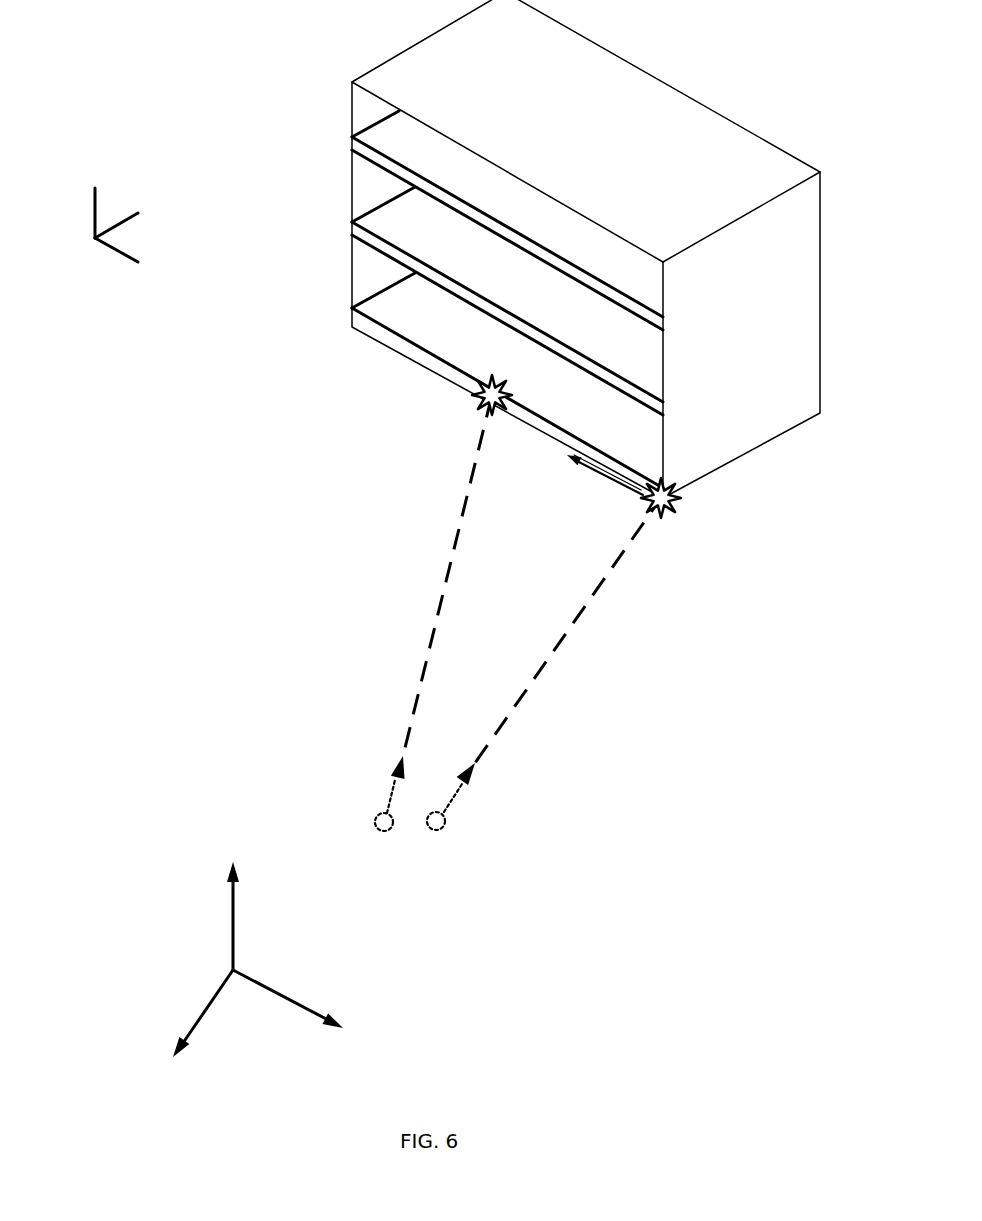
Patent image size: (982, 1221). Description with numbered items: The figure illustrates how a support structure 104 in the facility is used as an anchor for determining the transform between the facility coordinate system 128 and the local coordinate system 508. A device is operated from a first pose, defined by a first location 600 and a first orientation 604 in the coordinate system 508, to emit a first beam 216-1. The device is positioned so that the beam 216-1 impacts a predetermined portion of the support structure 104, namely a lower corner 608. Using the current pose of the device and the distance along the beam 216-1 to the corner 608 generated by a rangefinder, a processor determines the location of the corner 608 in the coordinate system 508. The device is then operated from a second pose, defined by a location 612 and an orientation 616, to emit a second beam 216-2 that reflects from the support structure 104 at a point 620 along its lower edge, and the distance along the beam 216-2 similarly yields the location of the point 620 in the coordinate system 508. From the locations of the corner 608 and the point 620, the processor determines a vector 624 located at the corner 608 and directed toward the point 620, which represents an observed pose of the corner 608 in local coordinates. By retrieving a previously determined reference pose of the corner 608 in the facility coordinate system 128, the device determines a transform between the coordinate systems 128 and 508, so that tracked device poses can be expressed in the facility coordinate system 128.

The support structure 104 is at (707, 121).
The facility coordinate system 128 is at (95, 240).
The coordinate system 508 is at (225, 854).
The first location 600 is at (443, 829).
The first orientation 604 is at (467, 782).
The lower corner 608 is at (679, 498).
The location 612 is at (375, 820).
The orientation 616 is at (396, 776).
The point 620 is at (476, 400).
The vector 624 is at (587, 473).
The first beam 216-1 is at (568, 630).
The second beam 216-2 is at (436, 575).